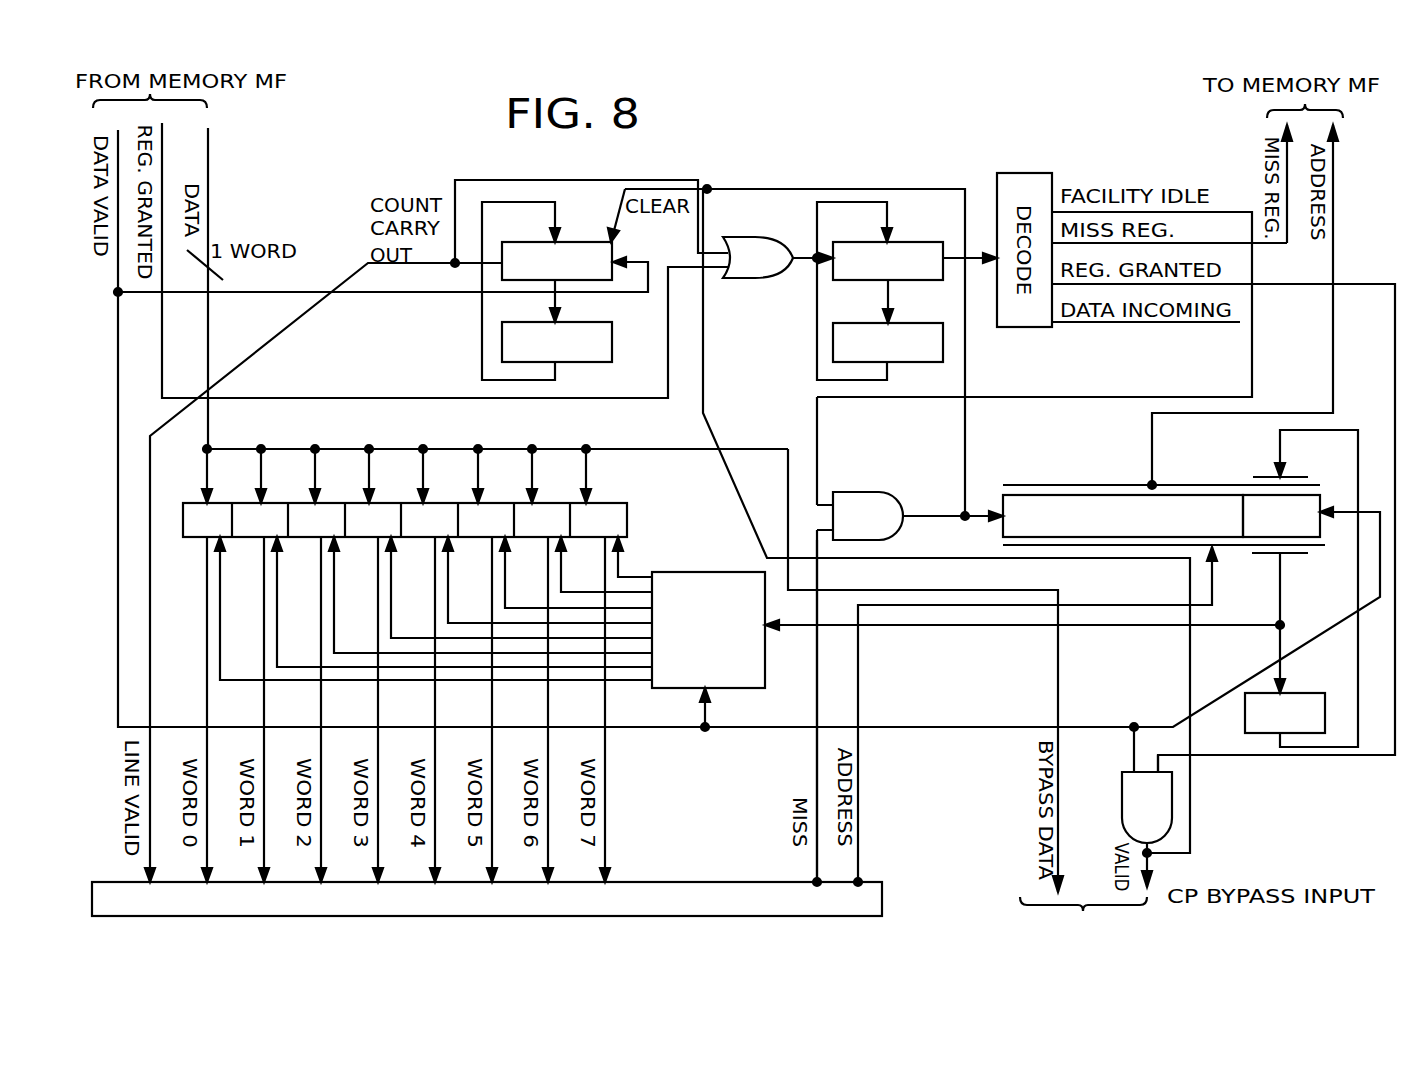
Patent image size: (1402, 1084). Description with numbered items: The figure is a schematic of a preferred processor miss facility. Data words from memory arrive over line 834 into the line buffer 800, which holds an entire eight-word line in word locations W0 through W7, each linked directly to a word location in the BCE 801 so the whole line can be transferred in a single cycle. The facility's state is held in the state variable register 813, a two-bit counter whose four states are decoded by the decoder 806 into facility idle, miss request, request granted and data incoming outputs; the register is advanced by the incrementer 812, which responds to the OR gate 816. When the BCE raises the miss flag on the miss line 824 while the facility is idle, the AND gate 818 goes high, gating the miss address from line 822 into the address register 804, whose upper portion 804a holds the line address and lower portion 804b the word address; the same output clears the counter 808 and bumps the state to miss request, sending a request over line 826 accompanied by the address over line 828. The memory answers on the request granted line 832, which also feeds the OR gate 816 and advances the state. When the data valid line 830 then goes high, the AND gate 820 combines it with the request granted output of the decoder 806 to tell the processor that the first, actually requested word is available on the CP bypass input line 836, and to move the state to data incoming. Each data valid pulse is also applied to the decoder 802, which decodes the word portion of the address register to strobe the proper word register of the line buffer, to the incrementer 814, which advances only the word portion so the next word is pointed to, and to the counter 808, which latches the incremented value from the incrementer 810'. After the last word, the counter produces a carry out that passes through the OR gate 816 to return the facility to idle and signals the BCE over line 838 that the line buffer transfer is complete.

The line buffer 800 is at (330, 503).
The BCE 801 is at (677, 882).
The decoder 802 is at (725, 572).
The address register 804 is at (1180, 580).
The upper portion 804a is at (1015, 502).
The lower portion 804b is at (1268, 500).
The decoder 806 is at (1017, 172).
The counter 808 is at (573, 242).
The incrementer 810' is at (580, 358).
The incrementer 812 is at (890, 362).
The state variable register 813 is at (917, 242).
The incrementer 814 is at (1245, 712).
The OR gate 816 is at (748, 278).
The AND gate 818 is at (858, 492).
The AND gate 820 is at (1160, 825).
The line 822 is at (860, 787).
The miss line 824 is at (815, 668).
The line 826 is at (1270, 187).
The line 828 is at (1340, 220).
The data valid line 830 is at (118, 312).
The request granted line 832 is at (162, 160).
The line 834 is at (208, 215).
The CP bypass input line 836 is at (1060, 762).
The line 838 is at (150, 648).